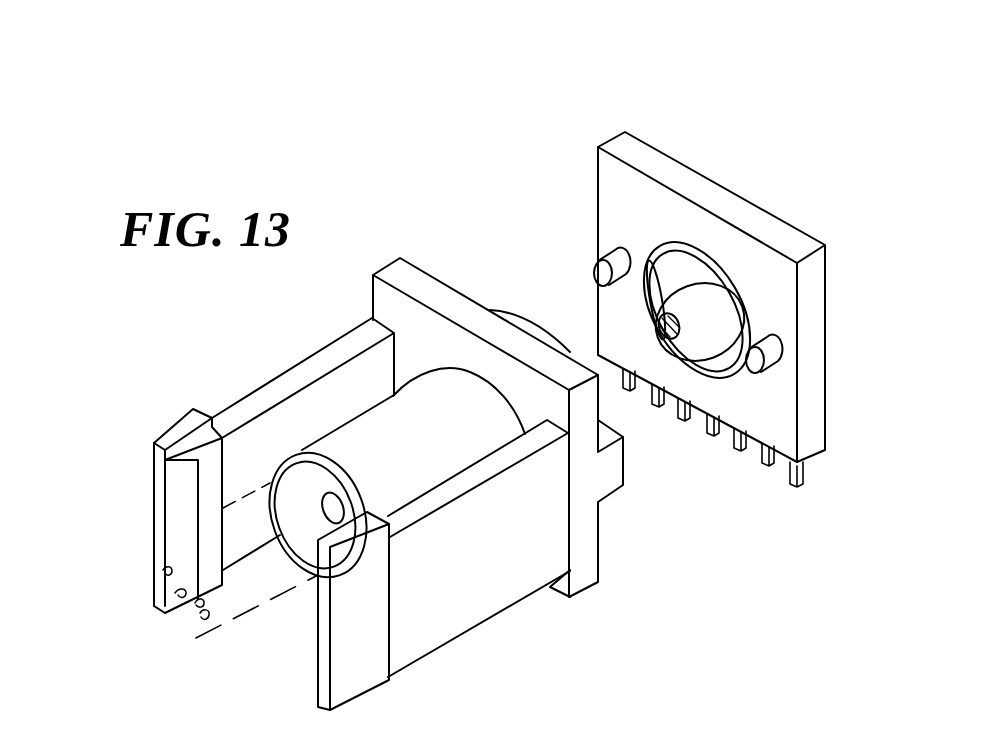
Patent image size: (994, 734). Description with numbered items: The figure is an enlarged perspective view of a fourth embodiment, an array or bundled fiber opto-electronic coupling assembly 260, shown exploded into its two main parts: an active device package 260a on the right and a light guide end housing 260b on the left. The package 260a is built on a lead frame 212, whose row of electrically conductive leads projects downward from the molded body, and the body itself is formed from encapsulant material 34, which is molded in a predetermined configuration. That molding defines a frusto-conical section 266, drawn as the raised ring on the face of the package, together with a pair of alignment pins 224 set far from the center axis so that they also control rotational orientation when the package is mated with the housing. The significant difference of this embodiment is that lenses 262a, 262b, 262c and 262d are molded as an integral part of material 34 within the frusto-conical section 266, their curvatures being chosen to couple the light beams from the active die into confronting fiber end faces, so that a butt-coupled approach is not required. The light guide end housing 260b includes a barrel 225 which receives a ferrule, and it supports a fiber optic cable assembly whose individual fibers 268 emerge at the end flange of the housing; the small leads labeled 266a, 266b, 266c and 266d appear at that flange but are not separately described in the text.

The opto-electronic coupling assembly 260 is at (660, 106).
The active device package 260a is at (684, 146).
The light guide end housing 260b is at (418, 259).
The encapsulant material 34 is at (770, 213).
The frusto-conical section 266 is at (693, 272).
The lens 262a is at (659, 326).
The lens 262b is at (652, 265).
The lens 262c is at (690, 270).
The lens 262d is at (700, 366).
The alignment pins 224 is at (777, 366).
The lead frame 212 is at (755, 452).
The barrel 225 is at (270, 505).
The wire lead 266a is at (163, 570).
The wire lead 266b is at (175, 593).
The wire lead 266c is at (195, 603).
The wire lead 266d is at (200, 613).
The fibers 268 is at (258, 612).